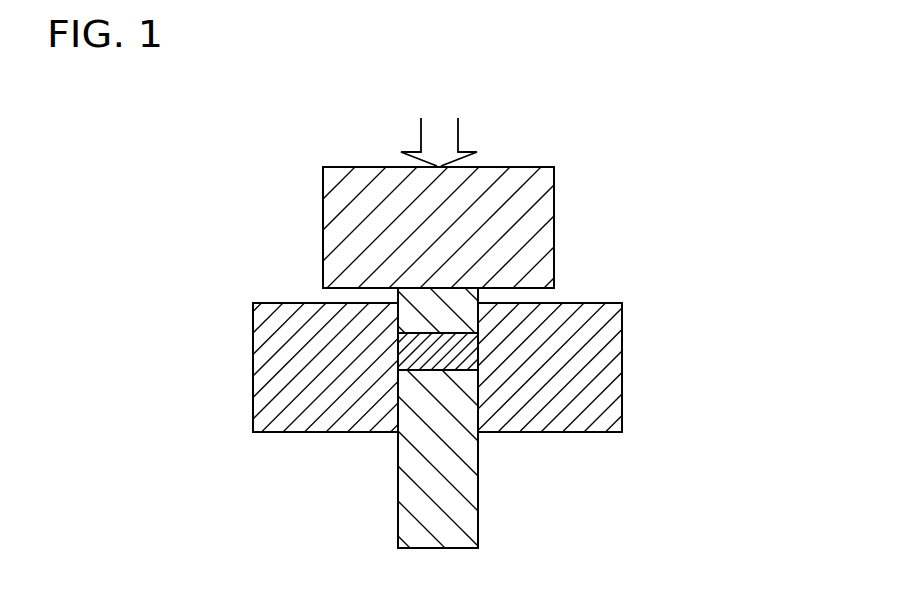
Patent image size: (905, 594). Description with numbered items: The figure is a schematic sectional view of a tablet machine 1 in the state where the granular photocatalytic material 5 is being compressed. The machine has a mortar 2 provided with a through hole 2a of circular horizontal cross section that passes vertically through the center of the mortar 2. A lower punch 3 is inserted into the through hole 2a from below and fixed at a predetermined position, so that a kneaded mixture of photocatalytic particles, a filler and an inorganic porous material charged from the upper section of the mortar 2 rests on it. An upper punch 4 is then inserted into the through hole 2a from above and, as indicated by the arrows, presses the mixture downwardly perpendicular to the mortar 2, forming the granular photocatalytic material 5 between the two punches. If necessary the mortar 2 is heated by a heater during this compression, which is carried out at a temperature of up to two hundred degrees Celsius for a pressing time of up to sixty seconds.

The tablet machine 1 is at (439, 320).
The mortar 2 is at (618, 301).
The through hole 2a is at (398, 424).
The lower punch 3 is at (478, 505).
The upper punch 4 is at (554, 201).
The granular photocatalytic material 5 is at (405, 348).